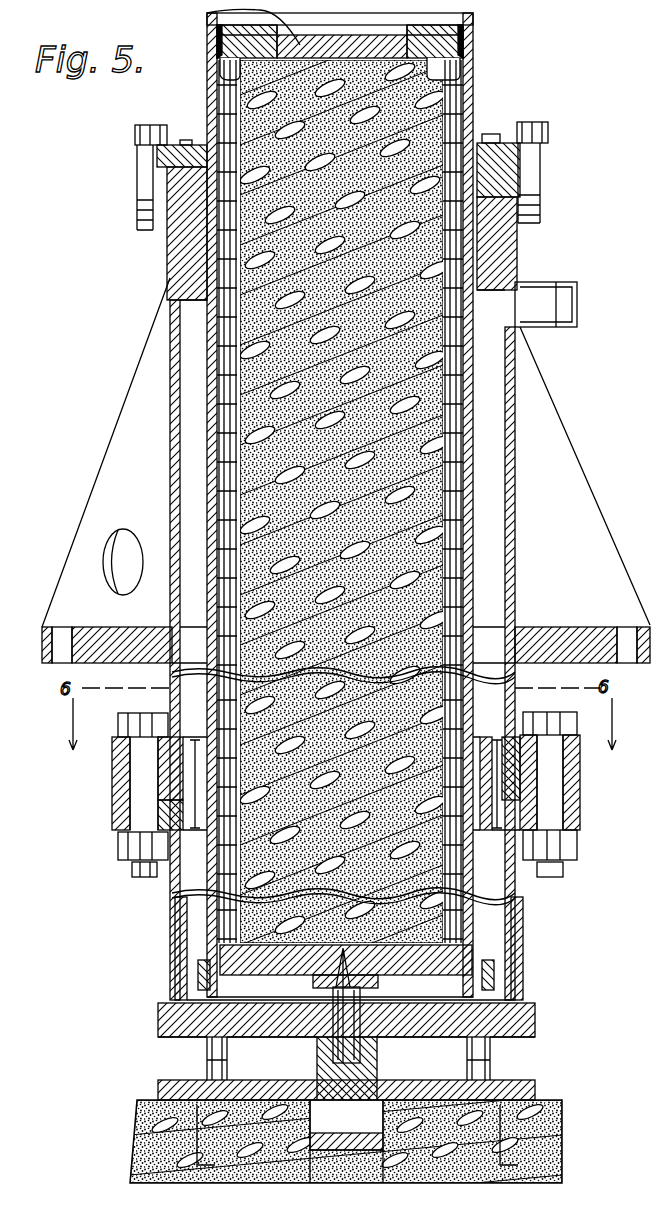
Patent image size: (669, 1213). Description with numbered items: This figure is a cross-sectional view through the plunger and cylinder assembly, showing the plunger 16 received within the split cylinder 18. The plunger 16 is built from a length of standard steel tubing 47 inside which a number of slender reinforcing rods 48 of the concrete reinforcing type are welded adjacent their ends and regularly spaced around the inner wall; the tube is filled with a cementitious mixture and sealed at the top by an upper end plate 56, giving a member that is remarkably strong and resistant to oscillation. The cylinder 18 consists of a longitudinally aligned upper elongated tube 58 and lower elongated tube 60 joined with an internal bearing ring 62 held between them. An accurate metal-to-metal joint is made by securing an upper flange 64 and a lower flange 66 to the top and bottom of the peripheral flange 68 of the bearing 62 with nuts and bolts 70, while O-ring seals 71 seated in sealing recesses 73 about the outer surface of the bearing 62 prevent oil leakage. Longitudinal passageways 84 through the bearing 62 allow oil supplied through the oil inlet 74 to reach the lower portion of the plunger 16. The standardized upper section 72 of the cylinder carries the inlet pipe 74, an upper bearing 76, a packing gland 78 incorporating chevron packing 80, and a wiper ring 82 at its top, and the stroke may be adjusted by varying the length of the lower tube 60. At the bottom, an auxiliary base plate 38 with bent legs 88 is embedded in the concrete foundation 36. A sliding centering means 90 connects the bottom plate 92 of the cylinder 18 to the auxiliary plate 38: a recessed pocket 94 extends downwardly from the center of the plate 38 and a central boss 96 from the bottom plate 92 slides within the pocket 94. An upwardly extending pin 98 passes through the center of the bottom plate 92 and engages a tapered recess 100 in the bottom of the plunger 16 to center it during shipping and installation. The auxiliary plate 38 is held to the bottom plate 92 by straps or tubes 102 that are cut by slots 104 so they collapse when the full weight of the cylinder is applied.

The plunger 16 is at (478, 72).
The cylinder 18 is at (520, 515).
The concrete foundation 36 is at (560, 1150).
The auxiliary base plate 38 is at (535, 1090).
The steel tubing 47 is at (472, 26).
The reinforcing rods 48 is at (228, 262).
The upper end plate 56 is at (215, 15).
The upper elongated tube 58 is at (515, 582).
The lower elongated tube 60 is at (515, 945).
The internal bearing ring 62 is at (185, 880).
The upper flange 64 is at (120, 760).
The lower flange 66 is at (112, 825).
The peripheral flange 68 is at (118, 792).
The nuts and bolts 70 is at (135, 720).
The O-ring seals 71 is at (533, 735).
The upper section 72 is at (520, 415).
The sealing recesses 73 is at (497, 740).
The oil inlet 74 is at (560, 303).
The upper bearing 76 is at (545, 200).
The packing gland 78 is at (500, 190).
The chevron packing 80 is at (490, 150).
The wiper ring 82 is at (200, 145).
The longitudinal passageways 84 is at (500, 860).
The bent legs 88 is at (520, 1122).
The sliding centering means 90 is at (312, 1069).
The bottom plate 92 is at (535, 1012).
The recessed pocket 94 is at (300, 1183).
The central boss 96 is at (377, 1072).
The pin 98 is at (333, 1030).
The tapered recess 100 is at (378, 982).
The straps or tubes 102 is at (490, 1046).
The slots 104 is at (490, 1070).